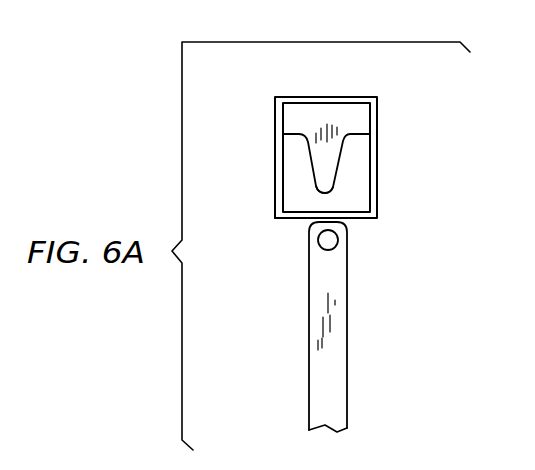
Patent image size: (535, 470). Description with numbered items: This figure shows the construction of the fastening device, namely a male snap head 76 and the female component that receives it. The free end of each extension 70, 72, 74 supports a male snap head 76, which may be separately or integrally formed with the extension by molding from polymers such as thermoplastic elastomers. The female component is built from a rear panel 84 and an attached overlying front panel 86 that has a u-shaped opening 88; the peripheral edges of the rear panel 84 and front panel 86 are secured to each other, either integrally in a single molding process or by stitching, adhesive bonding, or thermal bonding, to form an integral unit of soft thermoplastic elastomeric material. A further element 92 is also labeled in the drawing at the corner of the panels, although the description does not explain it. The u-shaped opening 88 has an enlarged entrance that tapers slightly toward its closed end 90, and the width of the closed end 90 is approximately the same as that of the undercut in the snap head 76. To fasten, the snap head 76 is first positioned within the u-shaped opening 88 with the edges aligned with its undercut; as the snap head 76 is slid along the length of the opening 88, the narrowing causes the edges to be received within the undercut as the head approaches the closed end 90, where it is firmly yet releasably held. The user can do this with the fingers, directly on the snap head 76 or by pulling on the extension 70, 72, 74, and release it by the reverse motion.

The extension 70 is at (375, 327).
The extension 72 is at (375, 327).
The extension 74 is at (328, 374).
The male snap head 76 is at (318, 244).
The rear panel 84 is at (333, 112).
The front panel 86 is at (361, 169).
The u-shaped opening 88 is at (327, 165).
The closed end 90 is at (330, 193).
The housing corner 92 is at (278, 220).